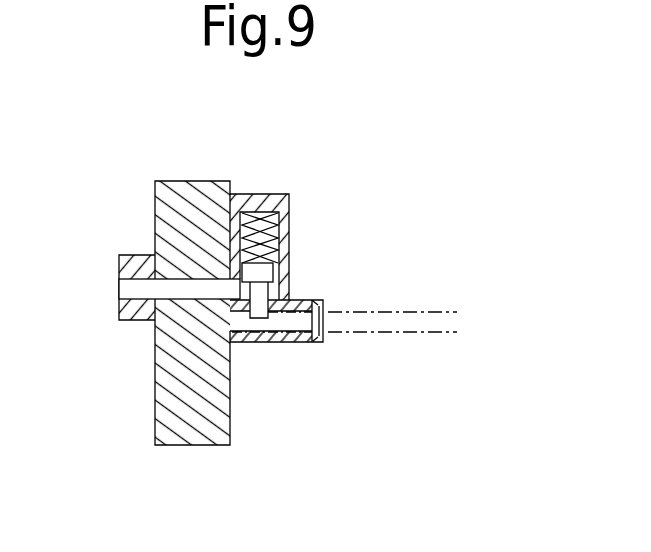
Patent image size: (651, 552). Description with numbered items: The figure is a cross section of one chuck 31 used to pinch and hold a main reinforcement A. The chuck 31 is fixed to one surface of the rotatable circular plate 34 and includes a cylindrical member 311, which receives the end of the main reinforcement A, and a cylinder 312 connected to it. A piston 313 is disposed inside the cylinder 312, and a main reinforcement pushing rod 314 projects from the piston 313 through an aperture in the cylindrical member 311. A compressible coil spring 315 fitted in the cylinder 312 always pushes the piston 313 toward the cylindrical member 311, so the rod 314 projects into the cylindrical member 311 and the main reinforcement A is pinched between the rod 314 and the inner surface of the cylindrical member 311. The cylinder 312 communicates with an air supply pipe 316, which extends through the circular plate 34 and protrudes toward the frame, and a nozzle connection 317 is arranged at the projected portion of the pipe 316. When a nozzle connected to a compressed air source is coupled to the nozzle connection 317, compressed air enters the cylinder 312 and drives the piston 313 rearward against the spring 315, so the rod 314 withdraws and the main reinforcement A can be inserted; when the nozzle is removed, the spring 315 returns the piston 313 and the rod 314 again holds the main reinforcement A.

The chuck 31 is at (253, 192).
The cylindrical member 311 is at (269, 344).
The cylinder 312 is at (290, 218).
The piston 313 is at (273, 277).
The main reinforcement pushing rod 314 is at (263, 305).
The compressible coil spring 315 is at (258, 226).
The air supply pipe 316 is at (175, 292).
The nozzle connection 317 is at (140, 255).
The circular plate 34 is at (192, 445).
The main reinforcement A is at (410, 327).